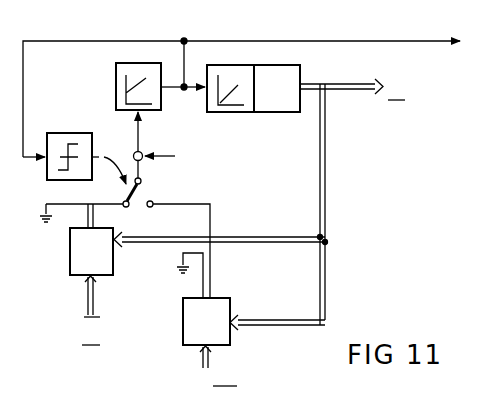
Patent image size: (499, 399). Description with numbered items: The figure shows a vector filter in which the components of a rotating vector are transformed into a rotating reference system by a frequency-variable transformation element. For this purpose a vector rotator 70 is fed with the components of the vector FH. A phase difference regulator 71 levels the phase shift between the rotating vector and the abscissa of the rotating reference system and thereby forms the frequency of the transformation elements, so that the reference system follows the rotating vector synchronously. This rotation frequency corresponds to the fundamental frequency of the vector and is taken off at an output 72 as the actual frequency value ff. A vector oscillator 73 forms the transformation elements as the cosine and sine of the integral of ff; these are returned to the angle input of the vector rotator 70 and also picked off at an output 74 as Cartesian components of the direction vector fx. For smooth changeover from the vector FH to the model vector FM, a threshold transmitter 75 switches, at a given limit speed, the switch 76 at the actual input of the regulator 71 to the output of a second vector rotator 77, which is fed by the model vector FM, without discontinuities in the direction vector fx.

The vector rotator 70 is at (69, 256).
The phase difference regulator 71 is at (115, 76).
The output 72 is at (378, 41).
The vector oscillator 73 is at (303, 65).
The output 74 is at (350, 83).
The threshold transmitter 75 is at (72, 133).
The switch 76 is at (147, 190).
The vector rotator 77 is at (232, 337).